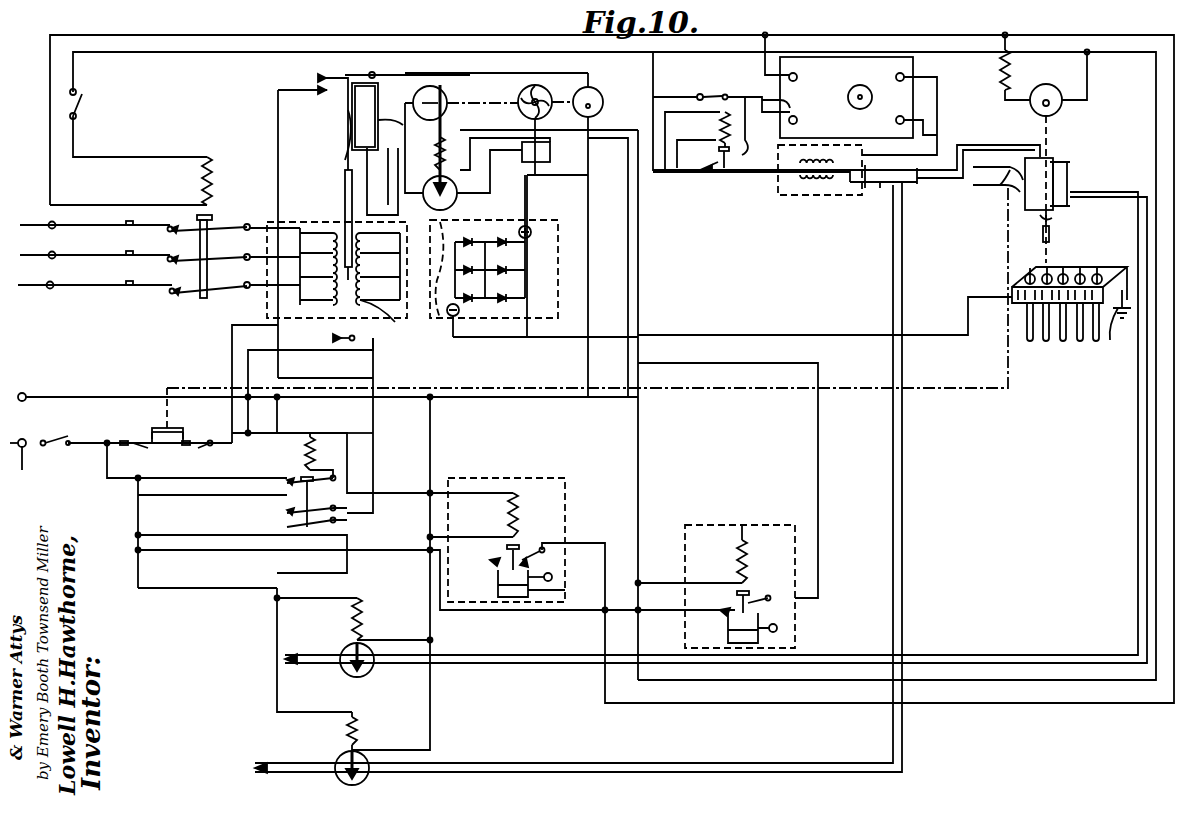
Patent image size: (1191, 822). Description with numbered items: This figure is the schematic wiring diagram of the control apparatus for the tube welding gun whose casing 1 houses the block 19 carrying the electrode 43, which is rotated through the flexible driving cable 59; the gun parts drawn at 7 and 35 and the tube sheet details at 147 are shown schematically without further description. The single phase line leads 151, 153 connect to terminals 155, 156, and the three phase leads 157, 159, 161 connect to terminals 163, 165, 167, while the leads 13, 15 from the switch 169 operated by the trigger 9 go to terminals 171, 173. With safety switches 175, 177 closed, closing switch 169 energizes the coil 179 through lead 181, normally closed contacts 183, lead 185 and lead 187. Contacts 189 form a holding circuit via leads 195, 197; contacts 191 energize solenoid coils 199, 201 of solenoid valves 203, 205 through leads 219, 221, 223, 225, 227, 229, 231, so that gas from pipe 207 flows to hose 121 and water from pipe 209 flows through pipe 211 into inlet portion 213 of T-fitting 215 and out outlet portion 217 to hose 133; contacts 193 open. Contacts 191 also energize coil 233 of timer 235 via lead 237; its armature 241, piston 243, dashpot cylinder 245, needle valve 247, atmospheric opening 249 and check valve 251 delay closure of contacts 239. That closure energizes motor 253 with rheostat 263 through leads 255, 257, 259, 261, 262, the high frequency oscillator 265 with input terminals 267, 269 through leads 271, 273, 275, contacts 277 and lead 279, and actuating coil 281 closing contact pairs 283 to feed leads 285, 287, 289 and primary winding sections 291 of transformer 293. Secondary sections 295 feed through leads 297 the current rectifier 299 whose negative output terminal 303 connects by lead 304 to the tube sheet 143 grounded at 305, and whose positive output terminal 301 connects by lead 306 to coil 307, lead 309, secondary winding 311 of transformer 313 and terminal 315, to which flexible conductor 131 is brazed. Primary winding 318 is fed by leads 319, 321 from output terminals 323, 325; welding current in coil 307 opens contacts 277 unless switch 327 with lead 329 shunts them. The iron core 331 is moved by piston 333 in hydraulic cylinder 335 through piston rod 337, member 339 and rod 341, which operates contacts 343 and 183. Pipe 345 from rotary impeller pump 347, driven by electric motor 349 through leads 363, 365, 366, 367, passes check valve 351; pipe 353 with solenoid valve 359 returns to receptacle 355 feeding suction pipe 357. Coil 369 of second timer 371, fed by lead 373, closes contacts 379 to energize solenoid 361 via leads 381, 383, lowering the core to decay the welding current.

The casing 1 is at (1067, 172).
The supply conduit 7 is at (983, 187).
The trigger 9 is at (1003, 187).
The lead 13 is at (140, 448).
The lead 15 is at (192, 448).
The block 19 is at (1055, 158).
The valve stem 35 is at (1050, 240).
The electrode 43 is at (1040, 218).
The flexible driving cable 59 is at (1050, 140).
The flexible hose 121 is at (1138, 192).
The flexible conductor 131 is at (1005, 145).
The flexible hose 133 is at (963, 148).
The tube sheet 143 is at (1090, 268).
The terminals 147 is at (1076, 340).
The lead 151 is at (1156, 527).
The lead 153 is at (21, 461).
The terminal 155 is at (27, 393).
The terminal 156 is at (22, 438).
The lead 157 is at (120, 205).
The lead 159 is at (86, 243).
The lead 161 is at (22, 225).
The terminal 163 is at (54, 285).
The terminal 165 is at (58, 255).
The terminal 167 is at (58, 225).
The switch 169 is at (155, 428).
The terminal 171 is at (122, 447).
The terminal 173 is at (210, 447).
The safety switch 175 is at (66, 438).
The safety switch 177 is at (80, 104).
The coil 179 is at (322, 424).
The lead 181 is at (232, 332).
The switch contacts 183 is at (330, 335).
The lead 185 is at (327, 350).
The lead 187 is at (280, 405).
The switch contacts 189 is at (285, 483).
The switch contacts 191 is at (285, 512).
The switch contacts 193 is at (285, 527).
The lead 195 is at (155, 447).
The lead 197 is at (365, 425).
The solenoid coil 199 is at (362, 615).
The solenoid coil 201 is at (362, 732).
The solenoid valve 203 is at (368, 670).
The solenoid valve 205 is at (336, 737).
The pipe 207 is at (323, 658).
The pipe 209 is at (290, 772).
The pipe 211 is at (902, 497).
The inlet portion 213 is at (890, 188).
The T-fitting 215 is at (878, 190).
The outlet portion 217 is at (903, 190).
The lead 219 is at (277, 680).
The lead 221 is at (395, 493).
The lead 223 is at (172, 500).
The lead 225 is at (137, 528).
The lead 227 is at (430, 433).
The lead 229 is at (319, 619).
The lead 231 is at (380, 640).
The coil 233 is at (516, 492).
The timer 235 is at (565, 493).
The lead 237 is at (470, 575).
The contacts 239 is at (488, 562).
The armature 241 is at (524, 558).
The piston 243 is at (565, 592).
The dashpot cylinder 245 is at (548, 552).
The needle valve 247 is at (552, 575).
The opening 249 is at (513, 600).
The check valve 251 is at (560, 543).
The motor 253 is at (1046, 84).
The lead 255 is at (1000, 62).
The lead 257 is at (1112, 28).
The lead 259 is at (660, 540).
The lead 261 is at (202, 552).
The lead 262 is at (1090, 67).
The rheostat 263 is at (1018, 55).
The high frequency oscillator 265 is at (838, 58).
The input terminal 267 is at (797, 77).
The input terminal 269 is at (797, 121).
The lead 271 is at (765, 62).
The lead 273 is at (789, 96).
The lead 275 is at (740, 155).
The switch contacts 277 is at (708, 172).
The lead 279 is at (656, 80).
The actuating coil 281 is at (212, 166).
The contact pairs 283 is at (160, 232).
The lead 285 is at (256, 226).
The lead 287 is at (252, 256).
The lead 289 is at (252, 284).
The primary winding sections 291 is at (330, 232).
The transformer 293 is at (296, 222).
The secondary winding sections 295 is at (391, 319).
The leads 297 is at (438, 277).
The current rectifier 299 is at (508, 222).
The positive output terminal 301 is at (531, 238).
The negative output terminal 303 is at (460, 311).
The lead 304 is at (748, 335).
The ground 305 is at (1116, 322).
The lead 306 is at (615, 175).
The coil 307 is at (720, 128).
The lead 309 is at (758, 175).
The secondary winding 311 is at (808, 187).
The transformer 313 is at (786, 193).
The terminal 315 is at (858, 185).
The primary winding 318 is at (828, 160).
The lead 319 is at (940, 95).
The lead 321 is at (935, 125).
The output terminal 323 is at (897, 75).
The output terminal 325 is at (898, 118).
The manually operated switch 327 is at (718, 85).
The lead 329 is at (683, 97).
The iron core 331 is at (345, 160).
The piston 333 is at (367, 158).
The hydraulic cylinder 335 is at (352, 125).
The piston rod 337 is at (408, 123).
The member 339 is at (375, 75).
The rod 341 is at (345, 138).
The contacts 343 is at (316, 77).
The pipe 345 is at (478, 103).
The rotary impeller pump 347 is at (538, 85).
The electric motor 349 is at (596, 90).
The check valve 351 is at (432, 86).
The pipe 353 is at (490, 193).
The receptacle 355 is at (550, 155).
The suction pipe 357 is at (552, 156).
The solenoid valve 359 is at (428, 206).
The solenoid 361 is at (430, 165).
The lead 363 is at (563, 73).
The lead 365 is at (278, 163).
The lead 366 is at (170, 550).
The lead 367 is at (595, 286).
The coil 369 is at (748, 562).
The second timer 371 is at (718, 528).
The lead 373 is at (655, 583).
The contacts 379 is at (718, 595).
The lead 381 is at (640, 228).
The lead 383 is at (460, 133).